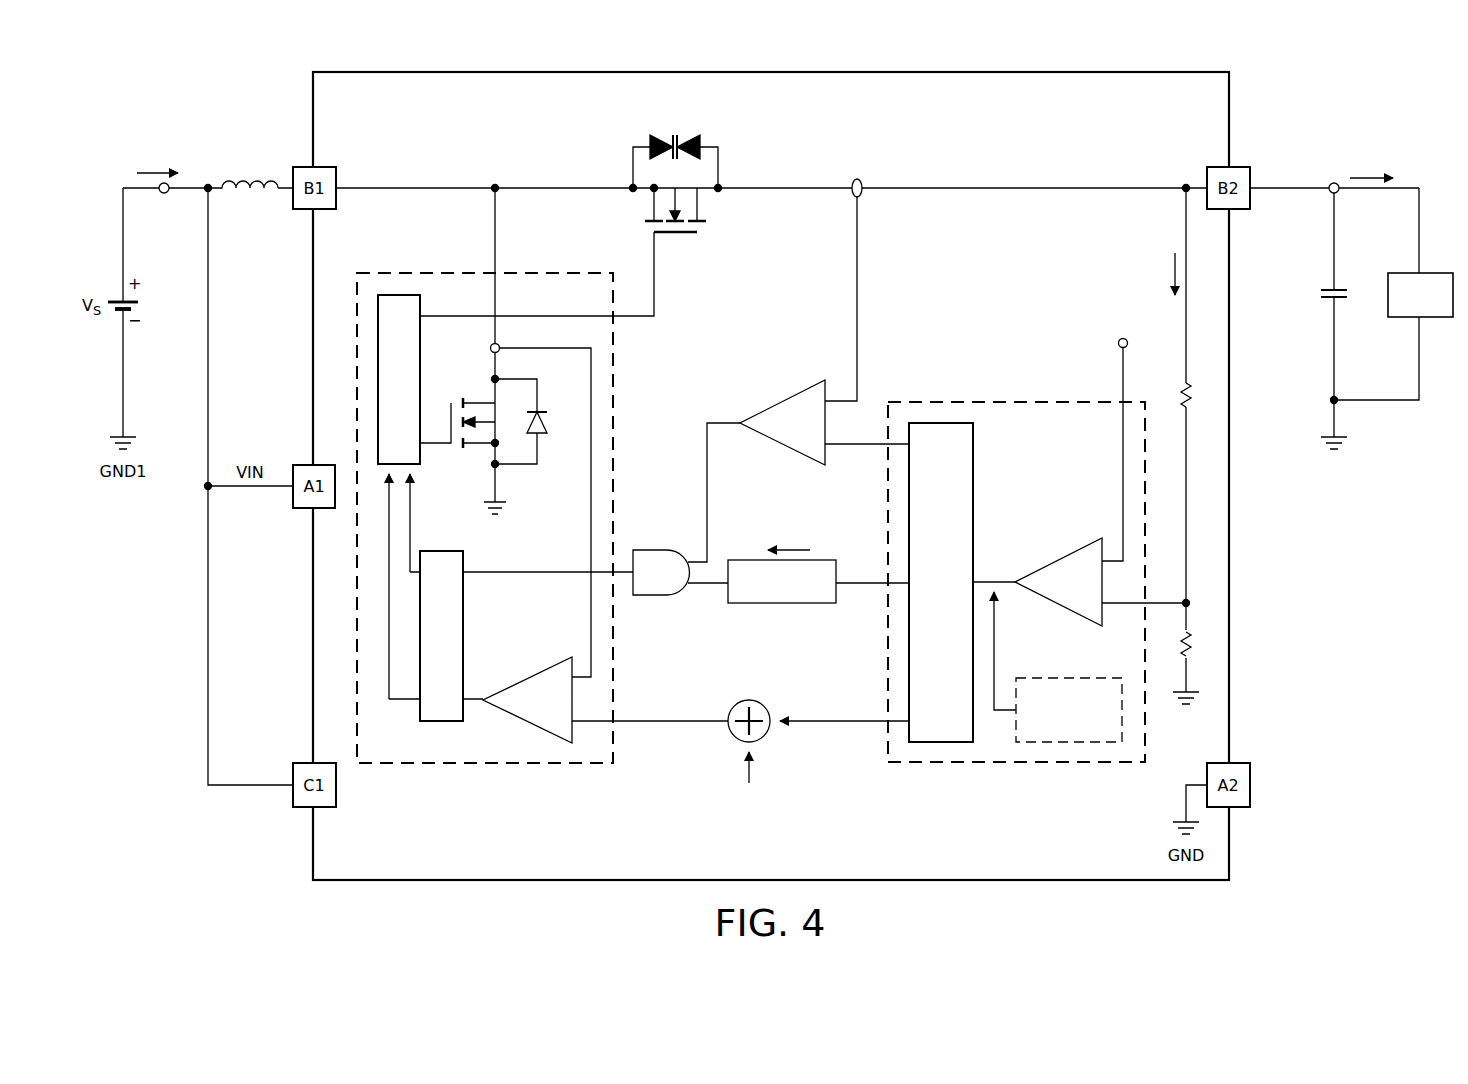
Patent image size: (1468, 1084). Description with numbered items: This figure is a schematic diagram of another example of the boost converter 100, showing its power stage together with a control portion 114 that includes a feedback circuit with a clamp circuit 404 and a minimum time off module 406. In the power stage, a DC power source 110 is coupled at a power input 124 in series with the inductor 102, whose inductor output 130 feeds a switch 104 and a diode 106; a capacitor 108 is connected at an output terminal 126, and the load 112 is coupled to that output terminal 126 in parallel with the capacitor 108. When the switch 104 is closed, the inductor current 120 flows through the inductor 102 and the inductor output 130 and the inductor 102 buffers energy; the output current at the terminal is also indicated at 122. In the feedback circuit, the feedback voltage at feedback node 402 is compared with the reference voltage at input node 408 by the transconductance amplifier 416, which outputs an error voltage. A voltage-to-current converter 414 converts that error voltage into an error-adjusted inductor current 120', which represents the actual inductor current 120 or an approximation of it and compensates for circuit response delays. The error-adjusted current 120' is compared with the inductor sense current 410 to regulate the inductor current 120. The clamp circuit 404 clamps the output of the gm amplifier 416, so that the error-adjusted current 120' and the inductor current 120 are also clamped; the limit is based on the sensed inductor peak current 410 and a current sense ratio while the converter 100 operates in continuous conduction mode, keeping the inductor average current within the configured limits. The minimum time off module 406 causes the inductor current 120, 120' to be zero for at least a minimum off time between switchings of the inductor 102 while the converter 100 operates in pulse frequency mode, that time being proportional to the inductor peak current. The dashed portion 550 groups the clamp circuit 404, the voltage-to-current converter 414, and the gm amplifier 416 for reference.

The boost converter 100 is at (1338, 662).
The inductor 102 is at (246, 196).
The switch 104 is at (431, 770).
The diode 106 is at (665, 142).
The capacitor 108 is at (1320, 293).
The DC power source 110 is at (140, 305).
The load 112 is at (1406, 270).
The control portion 114 is at (792, 858).
The inductor current 120 is at (156, 147).
The error-adjusted inductor current 120' is at (792, 525).
The output current 122 is at (1395, 158).
The power input 124 is at (163, 195).
The output terminal 126 is at (1337, 182).
The inductor output 130 is at (493, 186).
The feedback node 402 is at (1189, 610).
The clamp circuit 404 is at (1040, 668).
The minimum time off module 406 is at (780, 605).
The input node 408 is at (1118, 346).
The inductor sense current 410 is at (860, 179).
The voltage-to-current converter 414 is at (926, 613).
The transconductance amplifier 416 is at (1057, 557).
The portion of the converter 550 is at (1068, 778).